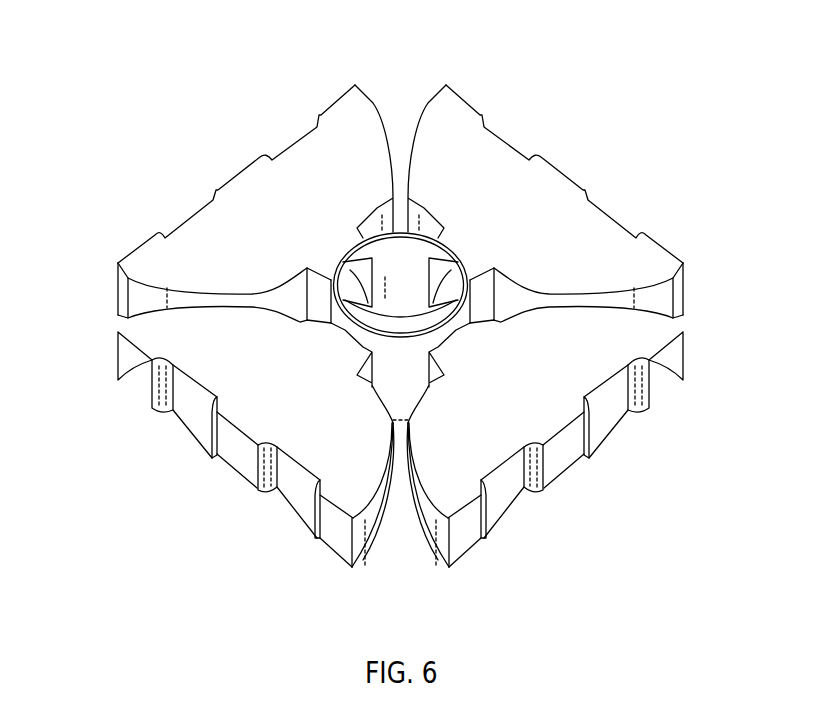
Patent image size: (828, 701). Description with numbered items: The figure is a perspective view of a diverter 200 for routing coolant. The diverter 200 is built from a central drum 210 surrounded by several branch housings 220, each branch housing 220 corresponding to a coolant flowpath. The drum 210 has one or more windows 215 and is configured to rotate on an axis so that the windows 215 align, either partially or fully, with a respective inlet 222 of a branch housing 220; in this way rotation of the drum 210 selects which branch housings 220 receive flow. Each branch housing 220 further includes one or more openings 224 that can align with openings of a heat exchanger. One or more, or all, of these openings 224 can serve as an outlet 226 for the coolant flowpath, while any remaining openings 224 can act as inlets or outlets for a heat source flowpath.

The diverter 200 is at (160, 110).
The drum 210 is at (410, 235).
The window 215 is at (443, 262).
The branch housing 220 is at (202, 235).
The inlet 222 is at (487, 267).
The opening 224 is at (670, 397).
The outlet 226 is at (550, 477).